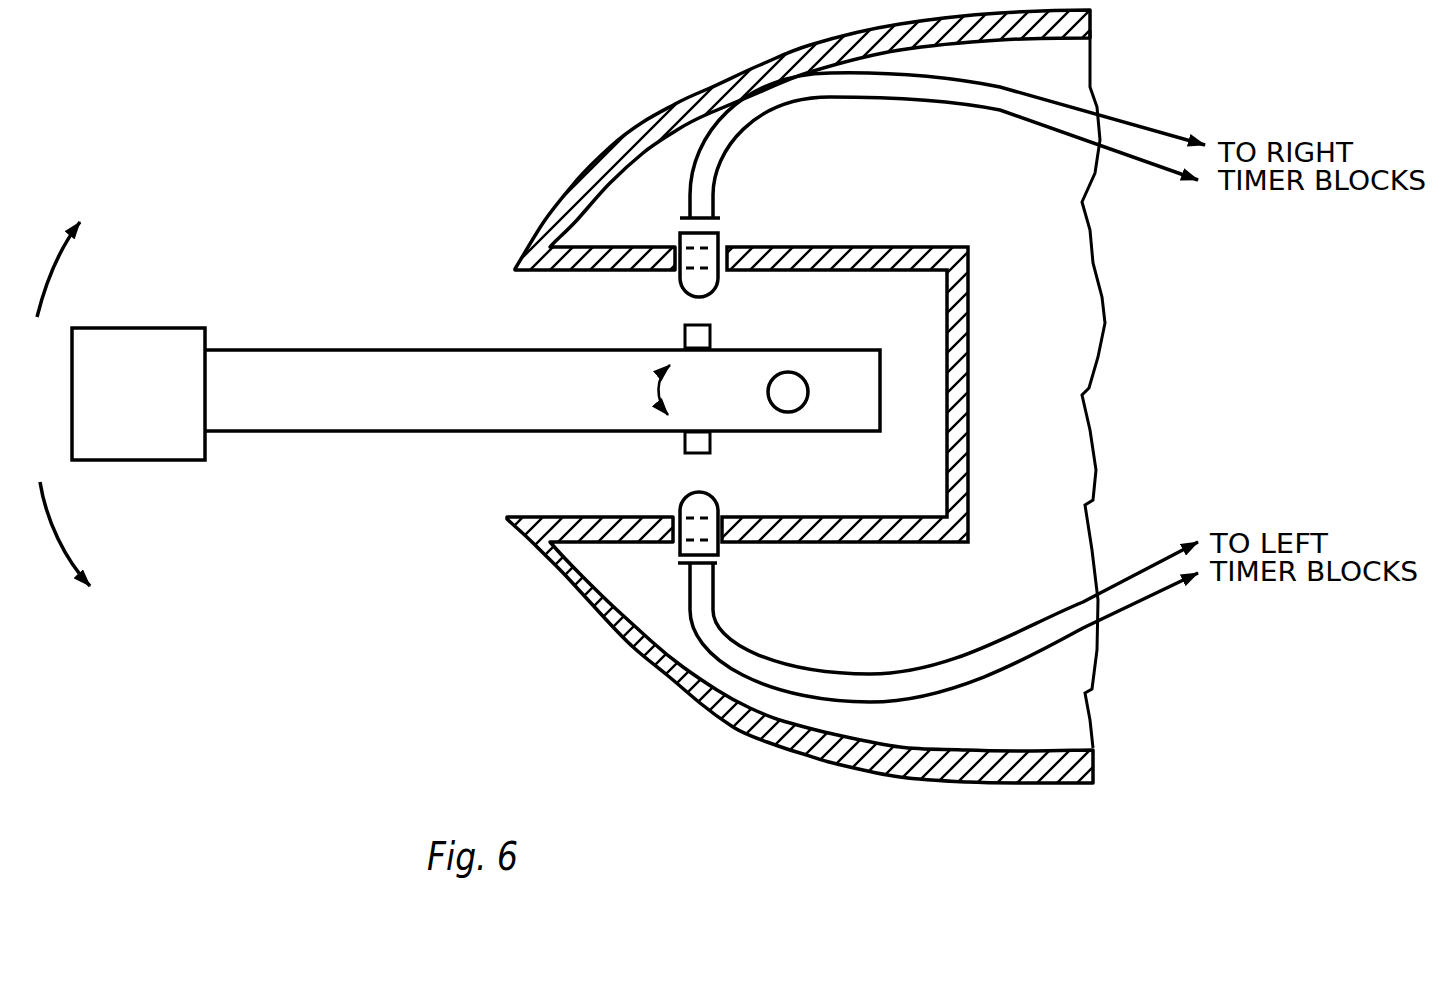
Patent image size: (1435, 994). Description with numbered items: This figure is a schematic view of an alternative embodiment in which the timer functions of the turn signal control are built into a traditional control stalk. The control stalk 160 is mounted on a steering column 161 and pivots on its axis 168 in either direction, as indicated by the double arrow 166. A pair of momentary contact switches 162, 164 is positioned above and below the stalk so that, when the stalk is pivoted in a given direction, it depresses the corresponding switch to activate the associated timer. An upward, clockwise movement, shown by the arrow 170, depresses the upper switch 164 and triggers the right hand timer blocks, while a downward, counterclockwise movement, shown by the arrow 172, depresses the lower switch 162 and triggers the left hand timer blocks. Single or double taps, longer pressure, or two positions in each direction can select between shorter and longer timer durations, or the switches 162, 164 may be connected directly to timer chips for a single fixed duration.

The control stalk 160 is at (325, 437).
The steering column 161 is at (680, 634).
The momentary contact switch 162 is at (723, 559).
The momentary contact switch 164 is at (722, 236).
The double arrow 166 is at (661, 390).
The axis 168 is at (793, 411).
The arrow 170 is at (50, 272).
The arrow 172 is at (58, 528).